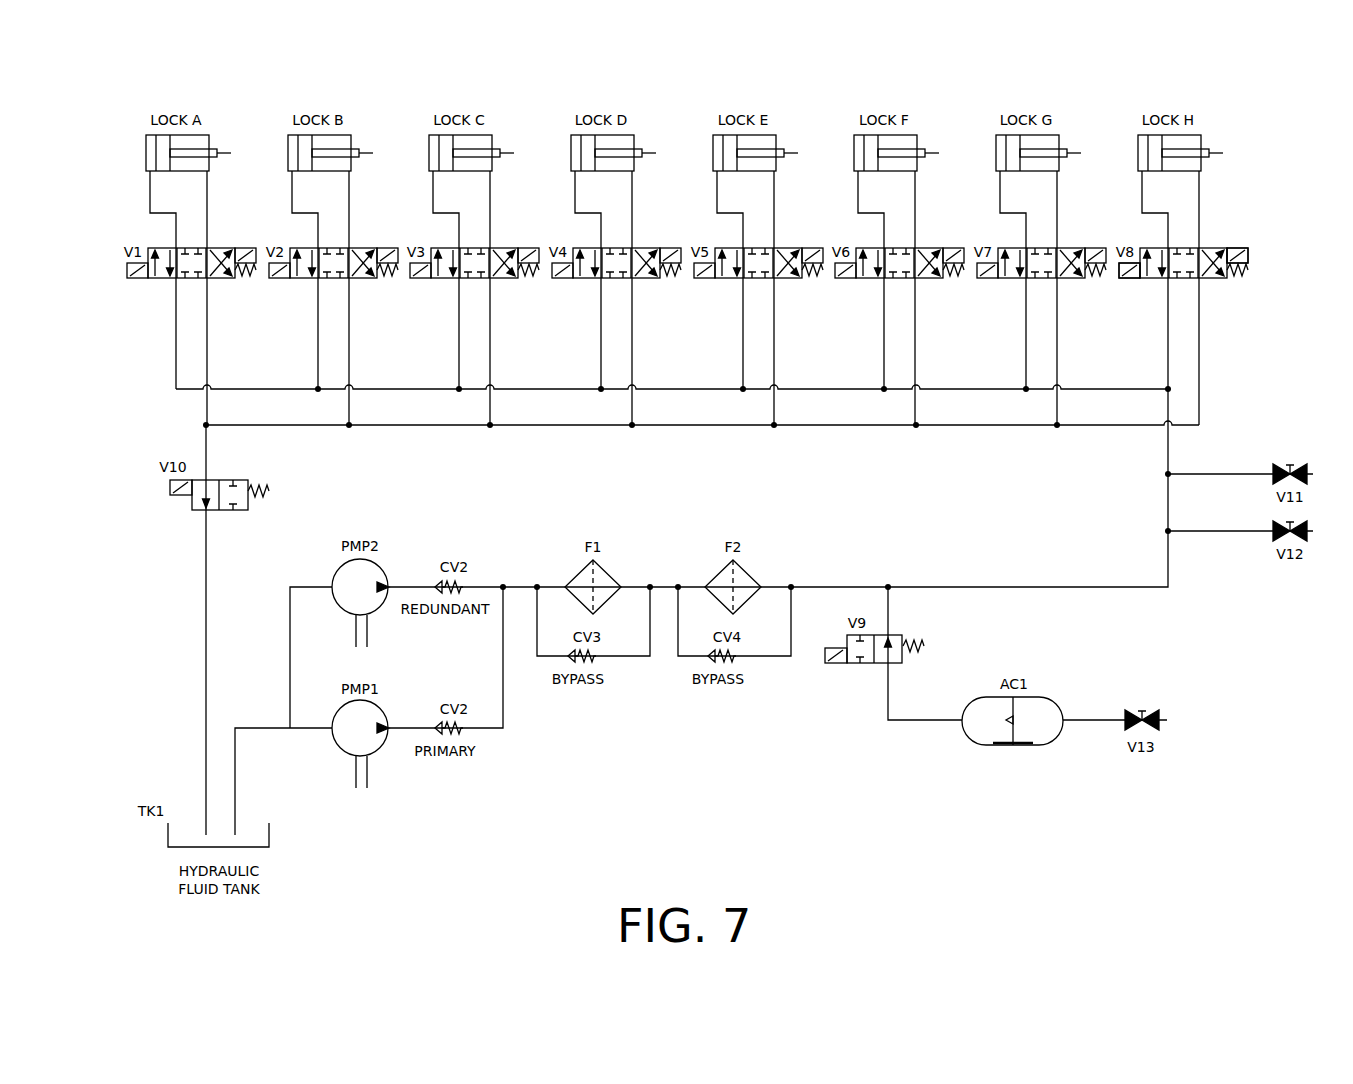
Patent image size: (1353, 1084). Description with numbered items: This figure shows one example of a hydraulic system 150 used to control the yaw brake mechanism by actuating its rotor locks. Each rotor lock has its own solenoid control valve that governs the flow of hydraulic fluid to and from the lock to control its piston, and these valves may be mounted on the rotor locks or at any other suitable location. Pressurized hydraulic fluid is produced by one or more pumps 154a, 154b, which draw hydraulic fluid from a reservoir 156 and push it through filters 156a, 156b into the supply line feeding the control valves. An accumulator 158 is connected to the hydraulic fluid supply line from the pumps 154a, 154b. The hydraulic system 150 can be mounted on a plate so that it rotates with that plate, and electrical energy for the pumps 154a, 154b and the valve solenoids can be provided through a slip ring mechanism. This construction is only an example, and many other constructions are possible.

The hydraulic system 150 is at (697, 770).
The pump 154a is at (341, 562).
The pump 154b is at (340, 747).
The reservoir 156 is at (270, 835).
The filter 156a is at (608, 567).
The filter 156b is at (748, 567).
The accumulator 158 is at (1040, 747).